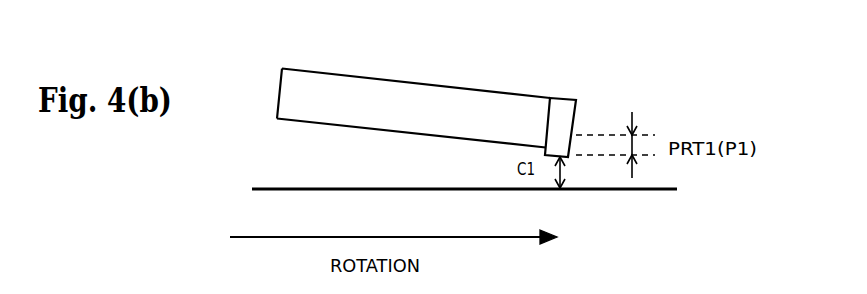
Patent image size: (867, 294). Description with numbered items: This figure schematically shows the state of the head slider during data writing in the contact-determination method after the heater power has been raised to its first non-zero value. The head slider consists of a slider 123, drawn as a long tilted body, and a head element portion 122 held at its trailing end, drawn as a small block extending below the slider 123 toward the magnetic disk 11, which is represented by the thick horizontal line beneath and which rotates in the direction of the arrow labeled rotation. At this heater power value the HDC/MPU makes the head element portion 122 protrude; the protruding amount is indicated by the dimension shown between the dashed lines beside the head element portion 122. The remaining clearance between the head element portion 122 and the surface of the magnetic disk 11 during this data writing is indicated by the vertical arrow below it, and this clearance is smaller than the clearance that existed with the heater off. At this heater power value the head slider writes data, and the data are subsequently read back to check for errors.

The magnetic disk 11 is at (287, 188).
The head element portion 122 is at (553, 97).
The slider 123 is at (404, 82).